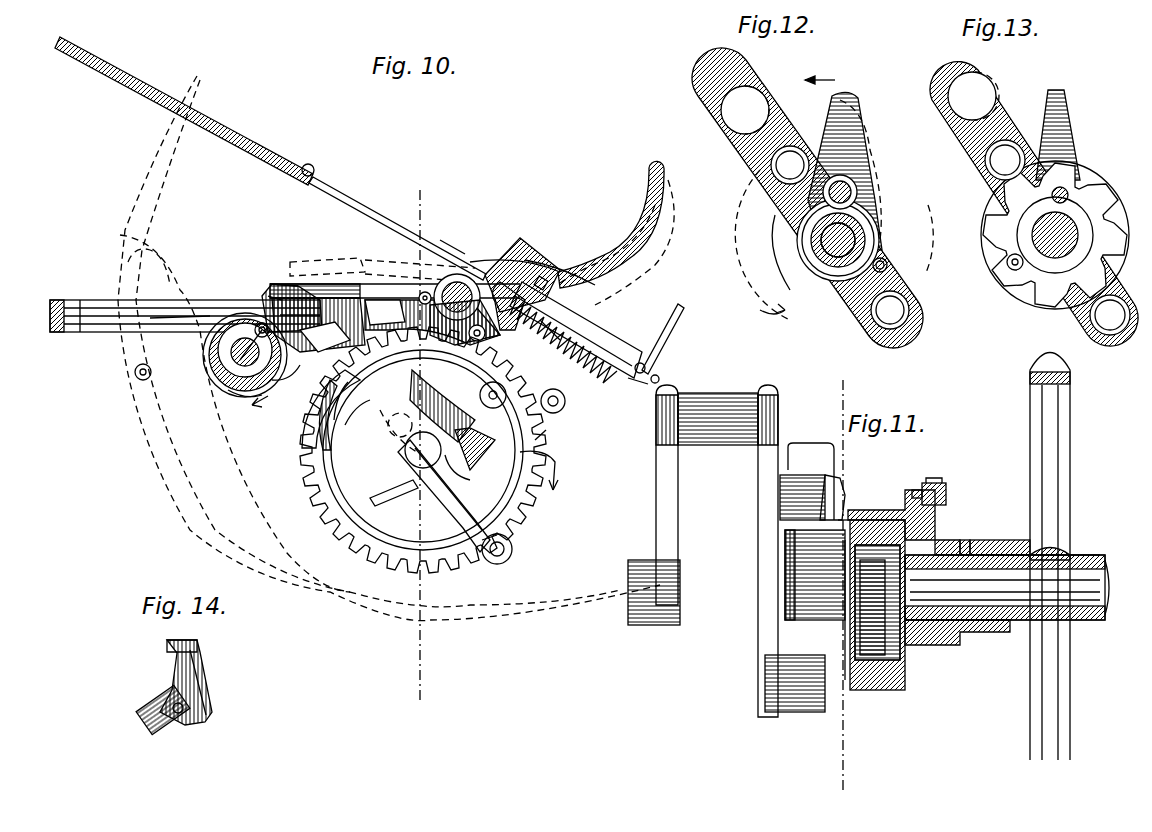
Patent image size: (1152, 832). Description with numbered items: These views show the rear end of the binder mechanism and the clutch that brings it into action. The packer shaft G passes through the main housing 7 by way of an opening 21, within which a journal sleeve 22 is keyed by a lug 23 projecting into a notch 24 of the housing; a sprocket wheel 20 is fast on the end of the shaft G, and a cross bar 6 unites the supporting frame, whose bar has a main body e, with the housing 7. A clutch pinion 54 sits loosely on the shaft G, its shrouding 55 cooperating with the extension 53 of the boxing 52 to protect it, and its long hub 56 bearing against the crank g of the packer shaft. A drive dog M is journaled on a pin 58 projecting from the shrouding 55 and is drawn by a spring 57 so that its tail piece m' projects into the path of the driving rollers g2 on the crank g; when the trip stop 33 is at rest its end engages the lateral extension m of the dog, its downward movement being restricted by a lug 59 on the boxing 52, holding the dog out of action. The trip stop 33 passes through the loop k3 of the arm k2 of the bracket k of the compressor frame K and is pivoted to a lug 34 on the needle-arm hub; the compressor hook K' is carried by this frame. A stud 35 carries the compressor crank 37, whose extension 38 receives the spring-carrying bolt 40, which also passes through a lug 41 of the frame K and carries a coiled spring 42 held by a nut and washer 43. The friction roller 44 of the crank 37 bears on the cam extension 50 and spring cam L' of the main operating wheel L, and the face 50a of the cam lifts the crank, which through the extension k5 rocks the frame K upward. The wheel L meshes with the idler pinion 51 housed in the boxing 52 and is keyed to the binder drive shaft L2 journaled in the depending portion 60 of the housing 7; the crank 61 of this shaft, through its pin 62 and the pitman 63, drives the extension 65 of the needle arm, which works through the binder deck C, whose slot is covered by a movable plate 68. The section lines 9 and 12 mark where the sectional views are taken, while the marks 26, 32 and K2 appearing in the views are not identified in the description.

In FIG. 10, the section line 9— 9 is at (440, 185).
In FIG. 10, the binder deck or table C is at (262, 148).
In FIG. 10, the movable plate 68 is at (445, 243).
In FIG. 10, the compressor frame K is at (389, 348).
In FIG. 10, the main body of supporting frame bar e is at (52, 306).
In FIG. 10, the tail piece m' is at (180, 313).
In FIG. 12, the tail piece m' is at (906, 243).
In FIG. 14, the tail piece m' is at (163, 716).
In FIG. 10, the drive dog M is at (262, 294).
In FIG. 11, the drive dog M is at (855, 480).
In FIG. 12, the drive dog M is at (872, 145).
In FIG. 13, the drive dog M is at (1075, 150).
In FIG. 14, the drive dog M is at (208, 670).
In FIG. 10, the cross bar 6 is at (255, 300).
In FIG. 11, the cross bar 6 is at (940, 485).
In FIG. 10, the lateral extension m is at (276, 272).
In FIG. 11, the lateral extension m is at (811, 471).
In FIG. 14, the lateral extension m is at (168, 647).
In FIG. 10, the packer shaft G is at (225, 398).
In FIG. 11, the packer shaft G is at (1103, 584).
In FIG. 12, the packer shaft G is at (775, 296).
In FIG. 13, the packer shaft G is at (1050, 265).
In FIG. 10, the shrouding 55 is at (226, 375).
In FIG. 11, the shrouding 55 is at (848, 660).
In FIG. 13, the shrouding 55 is at (1072, 305).
In FIG. 10, the clutch pinion 54 is at (268, 380).
In FIG. 11, the clutch pinion 54 is at (880, 640).
In FIG. 13, the clutch pinion 54 is at (988, 232).
In FIG. 10, the spring 57 is at (270, 400).
In FIG. 11, the spring 57 is at (840, 518).
In FIG. 12, the spring 57 is at (785, 262).
In FIG. 10, the idler gear pinion 51 is at (296, 382).
In FIG. 10, the main housing 7 is at (302, 290).
In FIG. 11, the main housing 7 is at (938, 530).
In FIG. 10, the trip stop 33 is at (325, 284).
In FIG. 10, the boxing 52 is at (300, 309).
In FIG. 10, the lug 59 is at (372, 318).
In FIG. 10, the loop k3 is at (368, 262).
In FIG. 10, the arm k2 is at (398, 268).
In FIG. 10, the lug 34 is at (416, 290).
In FIG. 10, the bracket k is at (478, 280).
In FIG. 10, the lever K2 is at (500, 272).
In FIG. 10, the upward extension 38 is at (533, 272).
In FIG. 10, the pin 32 is at (548, 280).
In FIG. 10, the perforated lug 41 is at (530, 314).
In FIG. 10, the stud 35 is at (548, 350).
In FIG. 10, the extension k5 is at (551, 342).
In FIG. 10, the coiled spring 42 is at (626, 322).
In FIG. 10, the nut and washer 43 is at (655, 380).
In FIG. 10, the spring-carrying bolt 40 is at (625, 385).
In FIG. 10, the compressor hook K' is at (628, 233).
In FIG. 10, the roller 26 is at (566, 405).
In FIG. 10, the compressor crank 37 is at (493, 388).
In FIG. 10, the friction roller 44 is at (550, 432).
In FIG. 10, the cam face 50a is at (565, 455).
In FIG. 10, the main operating wheel L is at (434, 450).
In FIG. 10, the spring cam L' is at (311, 424).
In FIG. 10, the binder drive shaft L2 is at (403, 470).
In FIG. 10, the depending portion 60 is at (405, 450).
In FIG. 10, the extension of needle arm 65 is at (354, 424).
In FIG. 10, the crank 61 is at (440, 500).
In FIG. 10, the cam extension 50 is at (490, 455).
In FIG. 10, the crank pin 62 is at (513, 552).
In FIG. 10, the pitman 63 is at (480, 558).
In FIG. 11, the section line 12— 12 is at (862, 383).
In FIG. 11, the crank of packer shaft g is at (772, 420).
In FIG. 12, the crank of packer shaft g is at (718, 110).
In FIG. 13, the crank of packer shaft g is at (1034, 204).
In FIG. 11, the driving rollers g2 is at (780, 495).
In FIG. 12, the driving rollers g2 is at (780, 168).
In FIG. 13, the driving rollers g2 is at (1000, 140).
In FIG. 11, the long hub 56 is at (770, 620).
In FIG. 12, the long hub 56 is at (842, 268).
In FIG. 11, the extension of boxing 53 is at (892, 665).
In FIG. 11, the notch 24 is at (965, 545).
In FIG. 11, the lug 23 is at (978, 548).
In FIG. 11, the journal sleeve 22 is at (996, 555).
In FIG. 11, the opening 21 is at (950, 650).
In FIG. 11, the sprocket wheel 20 is at (1070, 452).
In FIG. 12, the pin 58 is at (856, 190).
In FIG. 13, the pin 58 is at (1068, 193).